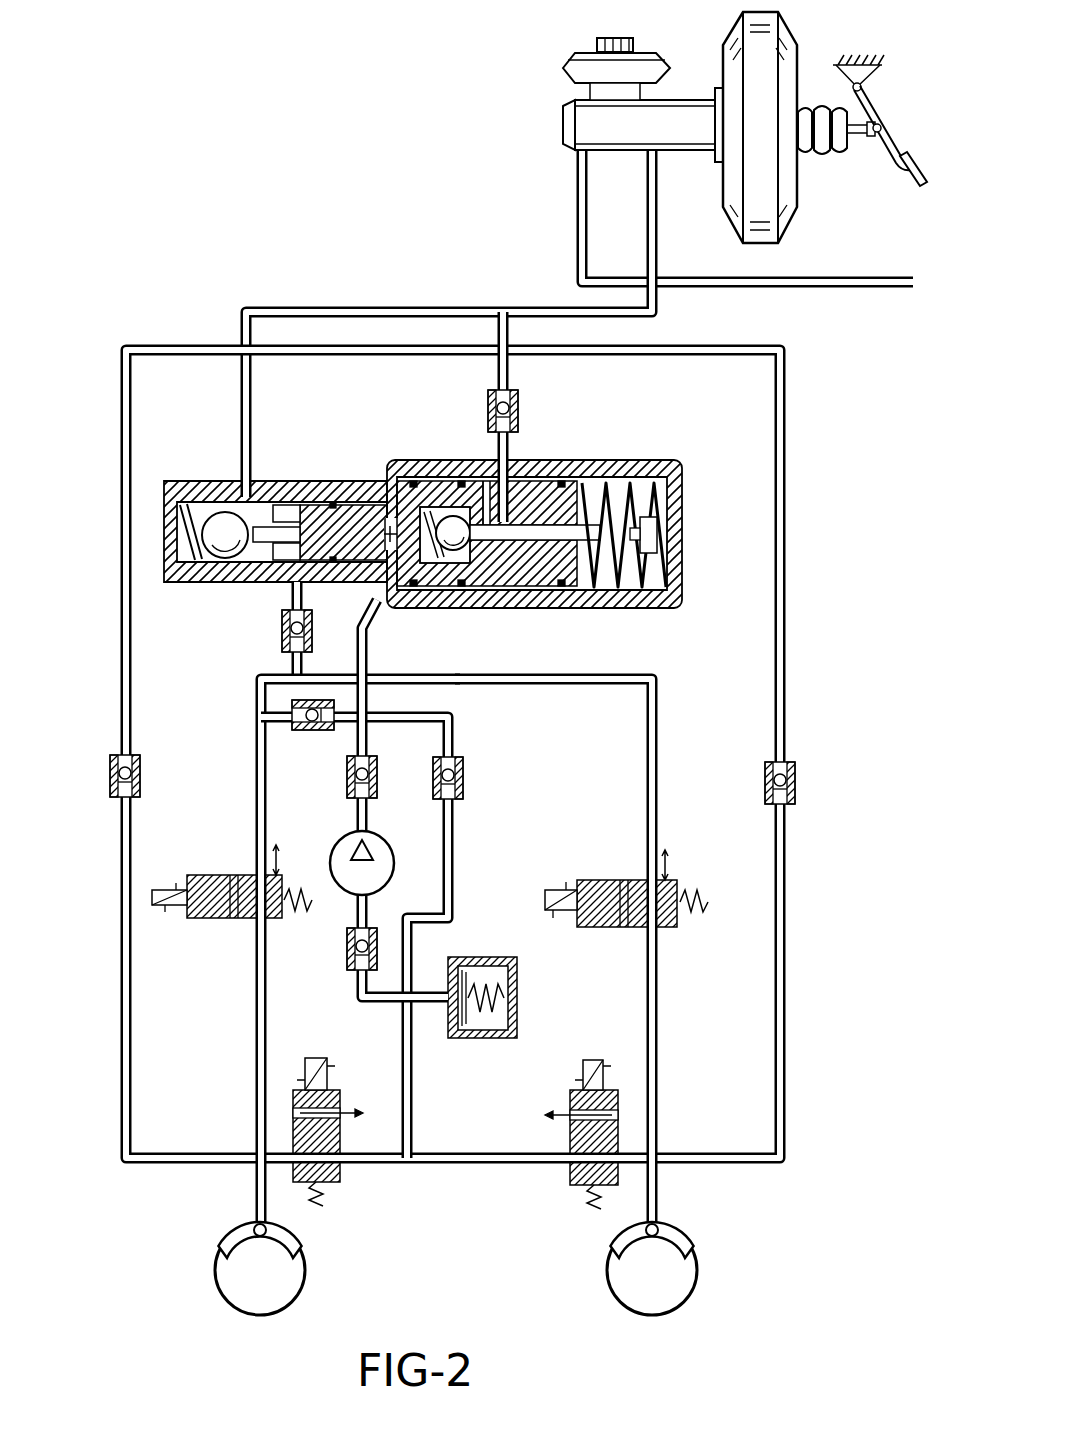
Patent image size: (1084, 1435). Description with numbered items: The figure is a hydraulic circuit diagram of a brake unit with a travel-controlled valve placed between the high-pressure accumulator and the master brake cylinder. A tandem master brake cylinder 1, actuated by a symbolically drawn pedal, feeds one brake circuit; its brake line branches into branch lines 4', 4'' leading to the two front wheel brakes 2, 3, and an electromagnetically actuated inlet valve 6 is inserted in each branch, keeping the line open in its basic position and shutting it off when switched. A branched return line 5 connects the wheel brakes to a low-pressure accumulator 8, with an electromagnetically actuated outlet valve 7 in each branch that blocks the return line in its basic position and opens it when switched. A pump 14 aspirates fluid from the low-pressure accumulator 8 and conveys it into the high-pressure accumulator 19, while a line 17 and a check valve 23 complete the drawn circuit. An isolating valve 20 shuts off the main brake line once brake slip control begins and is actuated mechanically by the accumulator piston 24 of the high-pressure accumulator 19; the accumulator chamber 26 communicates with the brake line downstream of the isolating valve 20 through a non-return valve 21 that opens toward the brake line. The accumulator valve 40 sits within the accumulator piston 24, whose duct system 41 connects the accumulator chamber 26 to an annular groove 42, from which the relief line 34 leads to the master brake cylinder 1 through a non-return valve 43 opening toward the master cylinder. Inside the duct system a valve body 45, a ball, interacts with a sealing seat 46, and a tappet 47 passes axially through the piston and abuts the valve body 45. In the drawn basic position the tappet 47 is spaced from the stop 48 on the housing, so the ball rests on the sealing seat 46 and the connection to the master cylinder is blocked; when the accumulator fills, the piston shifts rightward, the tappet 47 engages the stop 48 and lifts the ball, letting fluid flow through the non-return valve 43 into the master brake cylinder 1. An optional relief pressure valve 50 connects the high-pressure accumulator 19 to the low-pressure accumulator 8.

The tandem master brake cylinder 1 is at (580, 117).
The front wheel brake 2 is at (303, 1283).
The front wheel brake 3 is at (697, 1275).
The branch line 4' is at (332, 951).
The branch line 4'' is at (553, 951).
The return line 5 is at (412, 1090).
The inlet valve 6 is at (243, 875).
The outlet valve 7 is at (340, 1140).
The low-pressure accumulator 8 is at (500, 957).
The pump 14 is at (382, 872).
The suction/return line 17 is at (130, 1030).
The high-pressure accumulator 19 is at (563, 510).
The isolating valve 20 is at (270, 485).
The non-return valve 21 is at (305, 732).
The check valve 23 is at (142, 772).
The accumulator piston 24 is at (392, 462).
The accumulator chamber 26 is at (350, 482).
The relief line 34 is at (510, 374).
The accumulator valve 40 is at (433, 520).
The duct system 41 is at (537, 470).
The annular groove 42 is at (483, 460).
The non-return valve 43 is at (520, 407).
The valve body 45 is at (449, 552).
The sealing seat 46 is at (447, 510).
The tappet 47 is at (600, 588).
The stop 48 is at (657, 537).
The relief pressure valve 50 is at (465, 785).